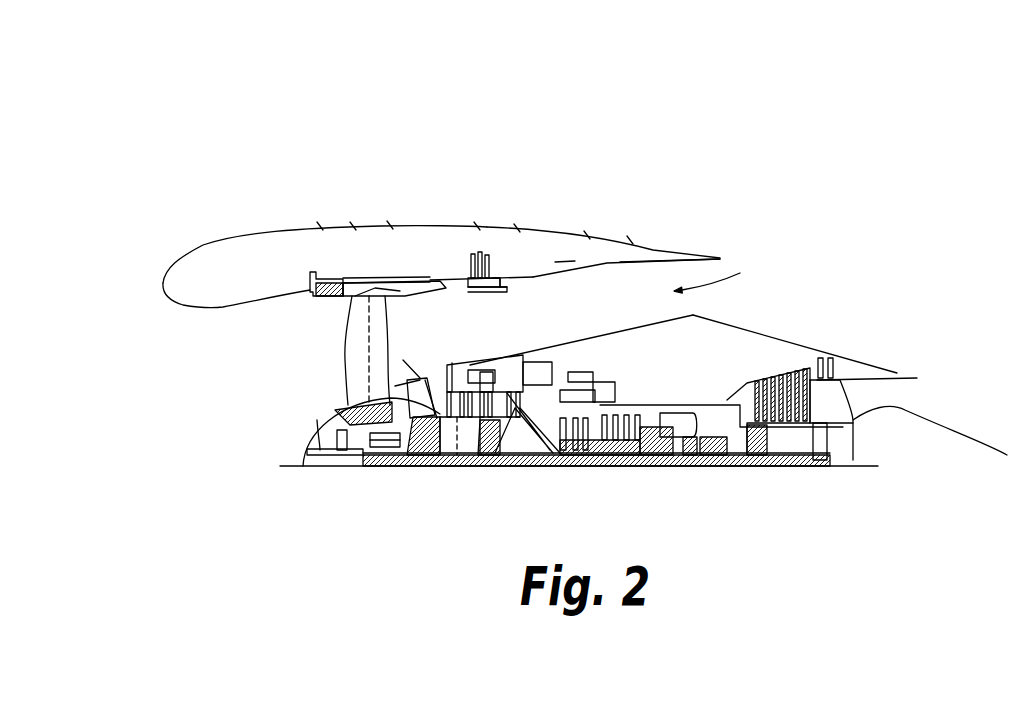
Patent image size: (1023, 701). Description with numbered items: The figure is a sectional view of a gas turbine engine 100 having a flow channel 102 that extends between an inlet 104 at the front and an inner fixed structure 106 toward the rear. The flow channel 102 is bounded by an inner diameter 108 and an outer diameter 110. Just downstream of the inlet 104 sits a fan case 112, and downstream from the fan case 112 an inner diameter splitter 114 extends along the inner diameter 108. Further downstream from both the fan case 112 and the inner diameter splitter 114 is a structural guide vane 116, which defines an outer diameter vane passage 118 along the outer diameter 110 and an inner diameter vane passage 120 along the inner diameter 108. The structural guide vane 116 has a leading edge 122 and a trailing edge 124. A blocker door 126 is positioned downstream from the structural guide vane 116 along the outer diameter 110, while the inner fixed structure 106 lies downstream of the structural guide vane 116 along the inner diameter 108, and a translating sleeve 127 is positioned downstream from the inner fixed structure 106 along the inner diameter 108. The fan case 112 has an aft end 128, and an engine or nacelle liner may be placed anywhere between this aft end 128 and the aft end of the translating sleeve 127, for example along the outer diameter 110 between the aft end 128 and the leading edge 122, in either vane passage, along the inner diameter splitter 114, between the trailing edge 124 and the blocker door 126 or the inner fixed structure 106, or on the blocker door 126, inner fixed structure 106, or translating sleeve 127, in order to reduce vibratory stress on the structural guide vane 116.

The gas turbine engine 100 is at (660, 90).
The flow channel 102 is at (740, 273).
The inlet 104 is at (265, 298).
The inner fixed structure 106 is at (693, 315).
The inner diameter 108 is at (520, 355).
The outer diameter 110 is at (575, 272).
The fan case 112 is at (336, 270).
The inner diameter splitter 114 is at (385, 362).
The structural guide vane 116 is at (484, 277).
The outer diameter vane passage 118 is at (466, 264).
The inner diameter vane passage 120 is at (458, 348).
The leading edge 122 is at (455, 312).
The trailing edge 124 is at (487, 302).
The blocker door 126 is at (561, 262).
The translating sleeve 127 is at (873, 372).
The aft end 128 is at (431, 222).